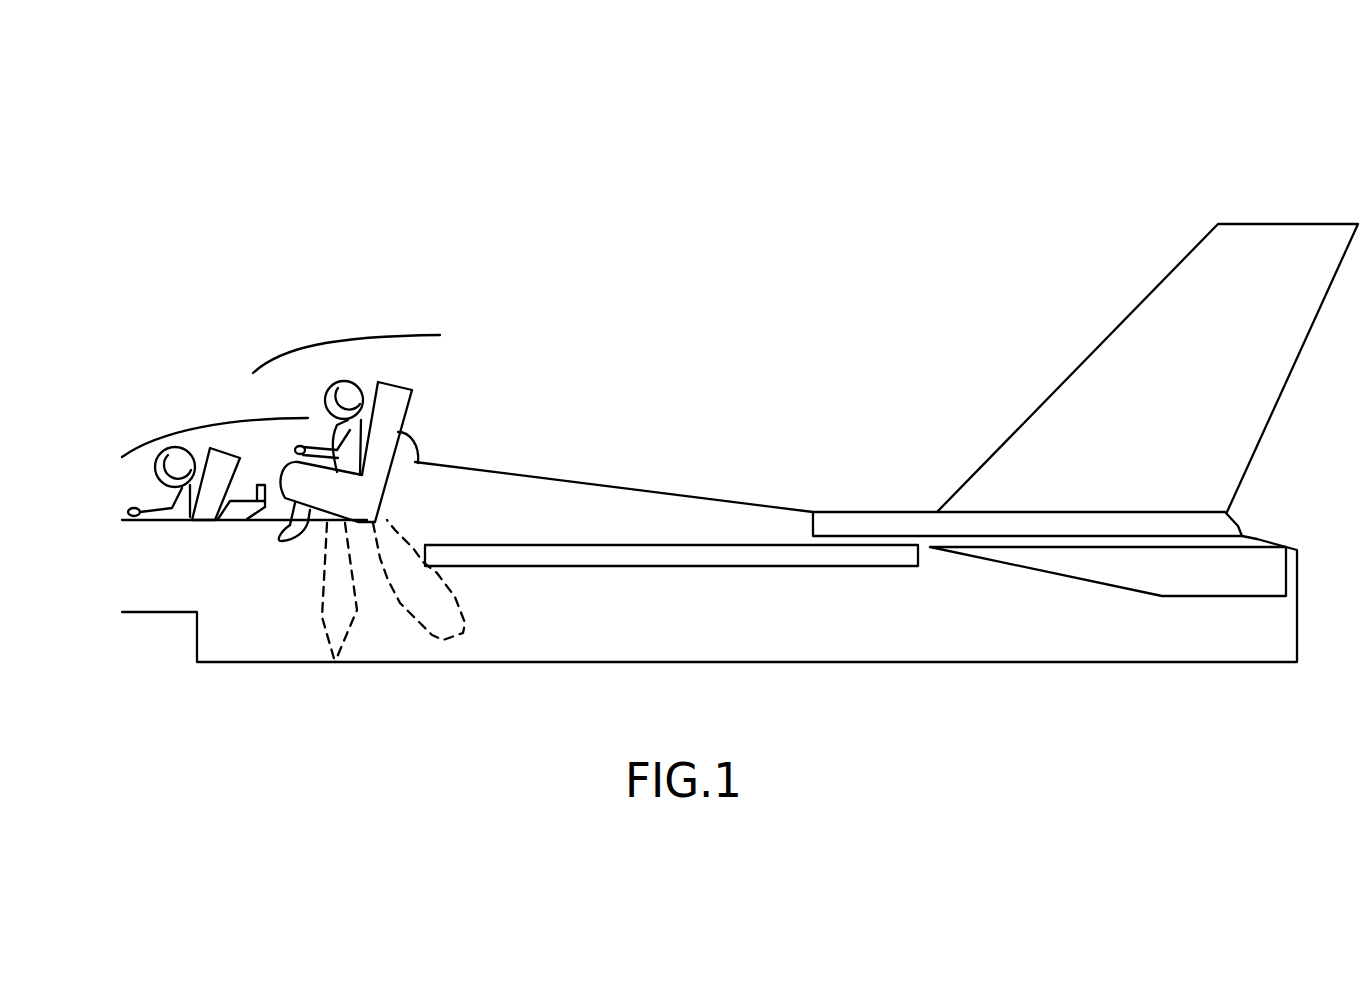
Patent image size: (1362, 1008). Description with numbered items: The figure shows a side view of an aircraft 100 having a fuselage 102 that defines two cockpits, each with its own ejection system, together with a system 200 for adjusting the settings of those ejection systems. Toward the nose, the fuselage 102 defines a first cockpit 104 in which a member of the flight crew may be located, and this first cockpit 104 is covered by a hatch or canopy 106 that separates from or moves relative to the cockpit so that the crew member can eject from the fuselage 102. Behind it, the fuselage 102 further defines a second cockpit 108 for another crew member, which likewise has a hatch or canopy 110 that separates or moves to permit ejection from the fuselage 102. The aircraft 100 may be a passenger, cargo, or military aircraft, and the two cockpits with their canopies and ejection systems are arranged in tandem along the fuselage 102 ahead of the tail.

The aircraft 100 is at (905, 272).
The fuselage 102 is at (840, 508).
The cockpit 104 is at (150, 417).
The canopy 106 is at (237, 420).
The second cockpit 108 is at (407, 393).
The canopy 110 is at (298, 352).
The ejection seat system 200 is at (425, 313).